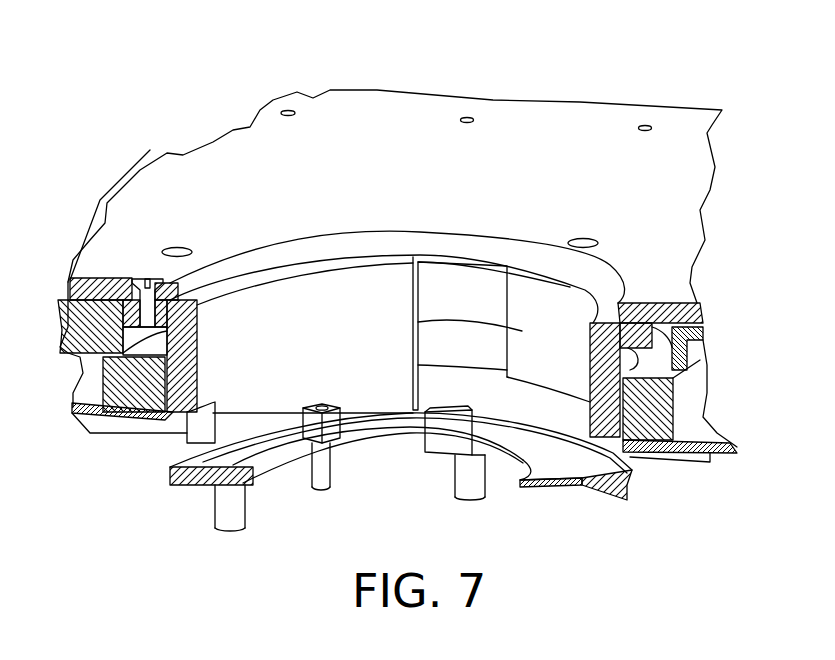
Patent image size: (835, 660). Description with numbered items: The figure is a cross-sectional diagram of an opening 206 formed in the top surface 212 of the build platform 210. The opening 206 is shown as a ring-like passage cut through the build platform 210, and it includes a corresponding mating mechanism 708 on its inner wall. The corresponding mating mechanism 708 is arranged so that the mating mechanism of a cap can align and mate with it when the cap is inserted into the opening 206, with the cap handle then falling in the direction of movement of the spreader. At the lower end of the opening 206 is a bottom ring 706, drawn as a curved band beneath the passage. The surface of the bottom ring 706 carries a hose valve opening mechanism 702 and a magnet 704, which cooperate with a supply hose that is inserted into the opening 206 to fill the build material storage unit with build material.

The opening 206 is at (455, 280).
The build platform 210 is at (650, 246).
The top surface 212 is at (225, 163).
The hose valve opening mechanism 702 is at (447, 430).
The magnet 704 is at (320, 427).
The bottom ring 706 is at (247, 445).
The corresponding mating mechanism 708 is at (492, 345).